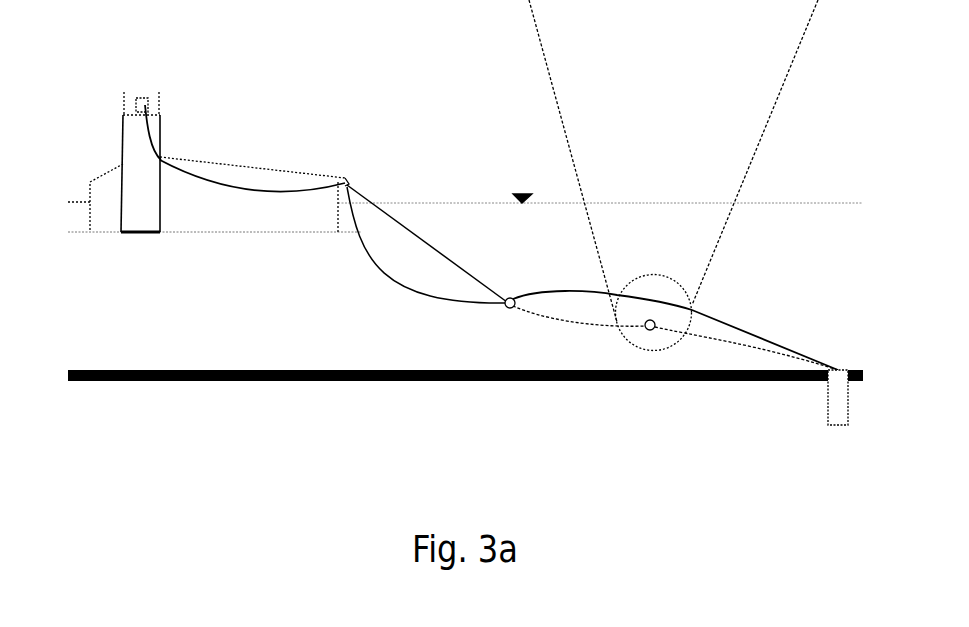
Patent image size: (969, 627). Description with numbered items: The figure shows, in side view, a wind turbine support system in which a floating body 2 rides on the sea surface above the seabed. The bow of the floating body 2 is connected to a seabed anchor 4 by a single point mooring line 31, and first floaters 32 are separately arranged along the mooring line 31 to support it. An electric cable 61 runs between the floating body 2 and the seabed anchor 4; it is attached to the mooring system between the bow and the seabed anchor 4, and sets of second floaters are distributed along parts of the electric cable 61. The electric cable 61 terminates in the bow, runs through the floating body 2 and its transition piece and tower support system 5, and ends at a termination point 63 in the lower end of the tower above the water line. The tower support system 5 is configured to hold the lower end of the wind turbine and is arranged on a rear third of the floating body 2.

The floating body 2 is at (232, 165).
The seabed anchor 4 is at (840, 425).
The tower support system 5 is at (128, 163).
The mooring line 31 is at (772, 357).
The first floaters 32 is at (503, 310).
The electric cable 61 is at (757, 330).
The termination point 63 is at (143, 102).